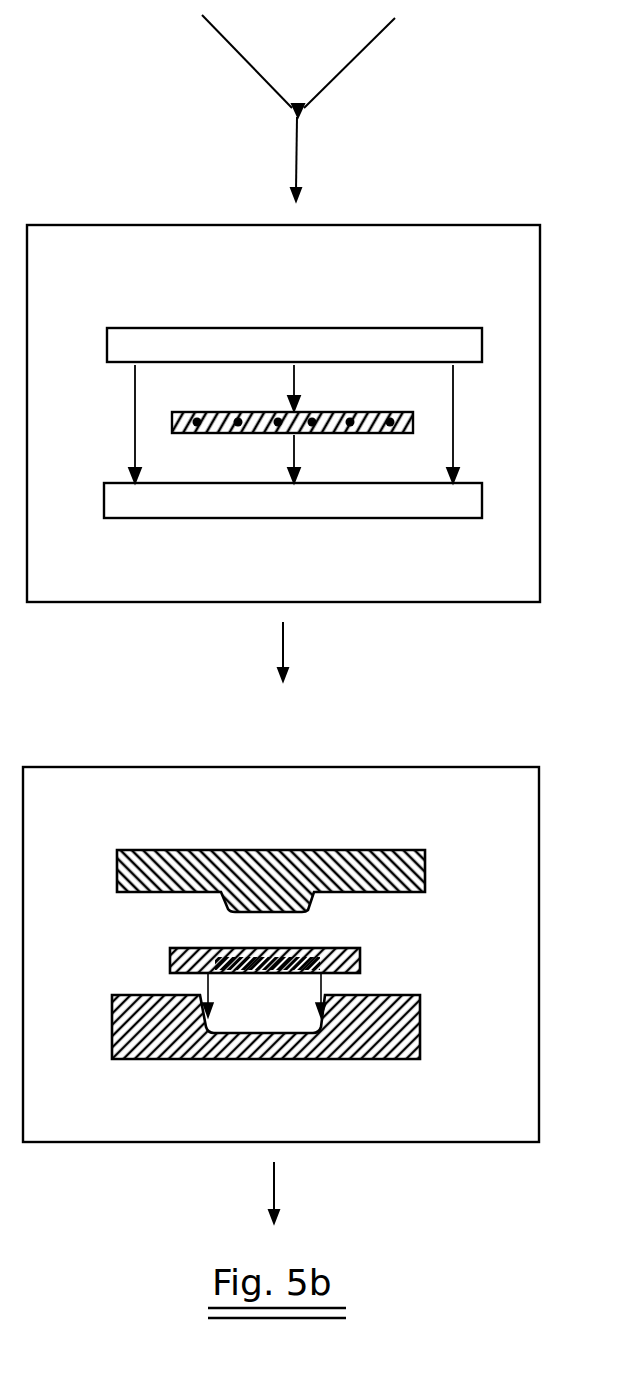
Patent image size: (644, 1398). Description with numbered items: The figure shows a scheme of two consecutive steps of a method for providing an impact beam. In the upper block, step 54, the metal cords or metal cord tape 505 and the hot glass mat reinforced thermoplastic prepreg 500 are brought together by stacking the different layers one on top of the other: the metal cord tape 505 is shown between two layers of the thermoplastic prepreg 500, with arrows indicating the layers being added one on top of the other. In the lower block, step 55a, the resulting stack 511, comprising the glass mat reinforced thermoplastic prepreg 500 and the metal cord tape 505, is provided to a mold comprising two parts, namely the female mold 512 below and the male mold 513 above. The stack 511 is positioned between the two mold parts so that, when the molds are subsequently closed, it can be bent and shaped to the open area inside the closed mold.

The step 54 is at (102, 276).
The step 55a is at (117, 819).
The glass mat reinforced thermoplastic prepreg 500 is at (202, 345).
The metal cord tape 505 is at (260, 432).
The stack 511 is at (360, 955).
The female mold 512 is at (388, 1035).
The male mold 513 is at (357, 867).